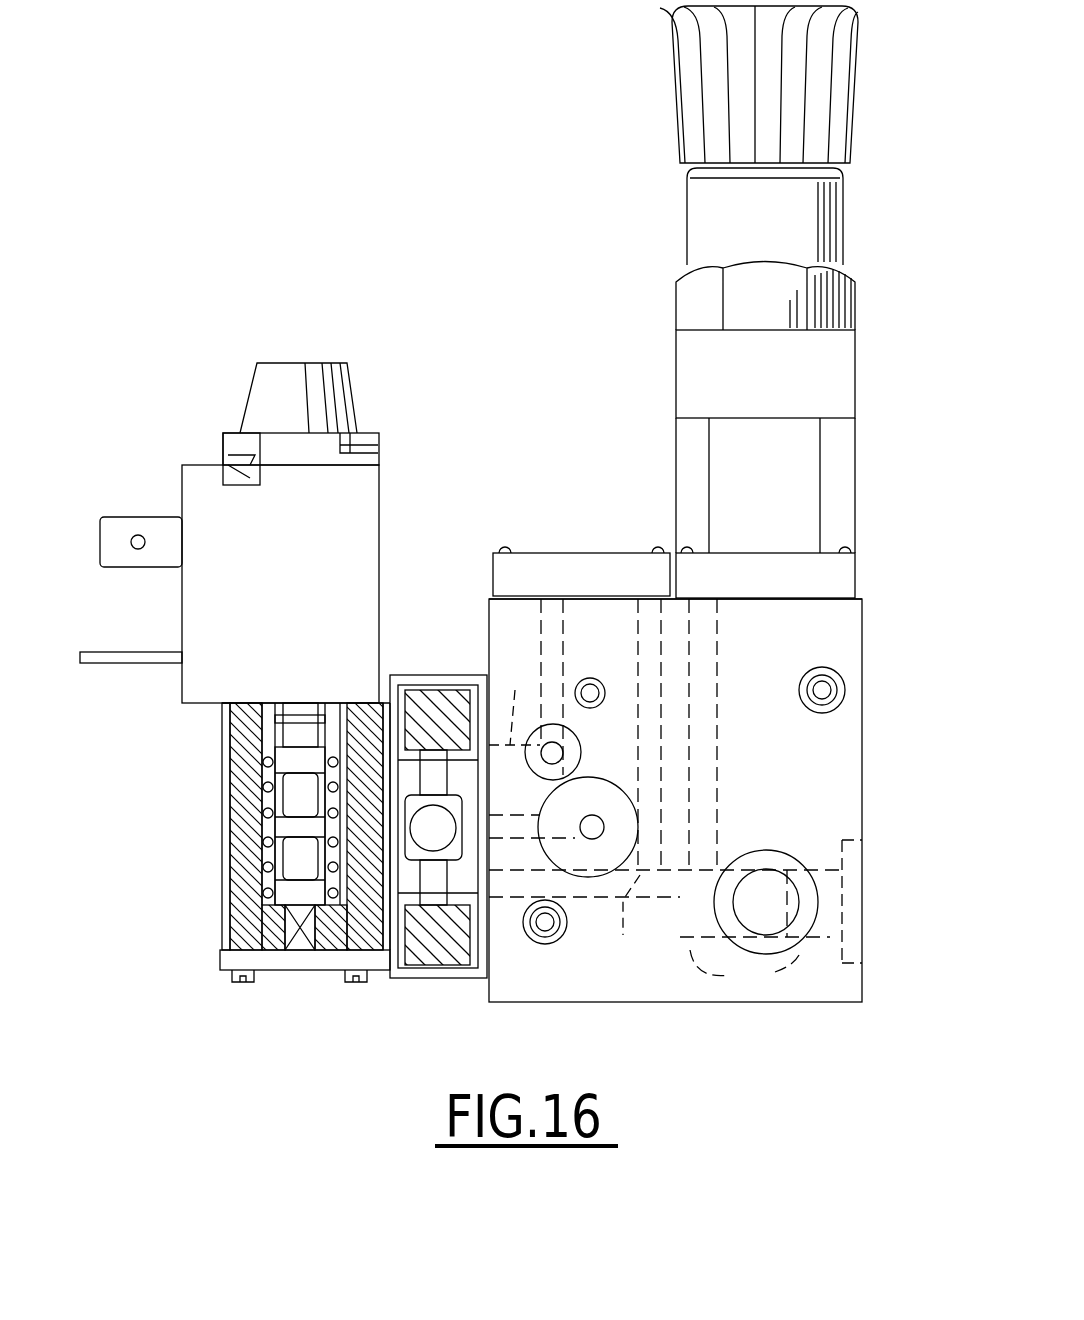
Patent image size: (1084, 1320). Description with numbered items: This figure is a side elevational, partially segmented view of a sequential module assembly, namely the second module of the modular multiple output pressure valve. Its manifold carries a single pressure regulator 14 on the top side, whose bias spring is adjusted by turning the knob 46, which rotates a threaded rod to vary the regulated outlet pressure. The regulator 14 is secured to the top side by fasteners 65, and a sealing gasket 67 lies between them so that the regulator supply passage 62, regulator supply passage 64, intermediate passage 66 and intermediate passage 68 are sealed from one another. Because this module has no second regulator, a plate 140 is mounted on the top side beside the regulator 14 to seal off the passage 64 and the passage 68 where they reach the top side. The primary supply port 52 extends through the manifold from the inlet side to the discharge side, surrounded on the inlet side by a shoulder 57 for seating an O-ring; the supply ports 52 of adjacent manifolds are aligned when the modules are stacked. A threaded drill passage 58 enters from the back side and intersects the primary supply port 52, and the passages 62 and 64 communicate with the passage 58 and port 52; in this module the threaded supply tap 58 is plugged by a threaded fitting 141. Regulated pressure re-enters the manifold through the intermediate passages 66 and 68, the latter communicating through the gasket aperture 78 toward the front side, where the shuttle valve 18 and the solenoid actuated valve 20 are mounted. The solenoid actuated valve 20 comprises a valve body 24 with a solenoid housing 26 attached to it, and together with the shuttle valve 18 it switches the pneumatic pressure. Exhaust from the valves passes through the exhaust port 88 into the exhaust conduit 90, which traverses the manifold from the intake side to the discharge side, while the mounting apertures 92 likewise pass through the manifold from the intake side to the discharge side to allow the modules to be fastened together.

The pressure regulator 14 is at (870, 348).
The shuttle valve 18 is at (435, 945).
The solenoid actuated valve 20 is at (403, 620).
The valve body 24 is at (240, 928).
The solenoid housing 26 is at (380, 480).
The knob 46 is at (683, 80).
The primary supply port 52 is at (768, 870).
The shoulder 57 is at (780, 862).
The threaded drill passage 58 is at (745, 971).
The regulator supply passage 62 is at (718, 650).
The regulator supply passage 64 is at (643, 624).
The fastener 65 is at (505, 548).
The intermediate passage 66 is at (577, 898).
The sealing gasket 67 is at (863, 598).
The intermediate passage 68 is at (545, 622).
The aperture 78 is at (557, 748).
The exhaust port 88 is at (505, 822).
The exhaust conduit 90 is at (598, 838).
The mounting aperture 92 is at (595, 687).
The plate 140 is at (584, 572).
The threaded fitting 141 is at (847, 913).